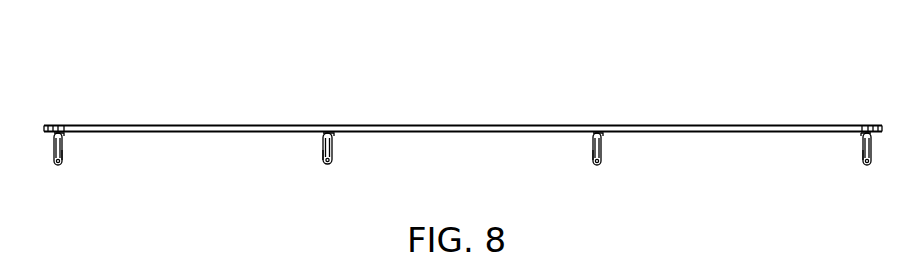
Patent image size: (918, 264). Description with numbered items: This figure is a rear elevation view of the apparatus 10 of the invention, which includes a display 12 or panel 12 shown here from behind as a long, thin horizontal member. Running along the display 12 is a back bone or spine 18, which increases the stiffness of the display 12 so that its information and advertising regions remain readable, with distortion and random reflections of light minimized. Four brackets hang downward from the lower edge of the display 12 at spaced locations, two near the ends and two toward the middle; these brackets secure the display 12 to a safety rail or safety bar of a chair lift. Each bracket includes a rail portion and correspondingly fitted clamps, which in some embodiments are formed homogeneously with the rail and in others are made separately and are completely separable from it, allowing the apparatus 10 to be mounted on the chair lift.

The apparatus 10 is at (784, 72).
The display 12 is at (463, 106).
The spine 18 is at (443, 126).